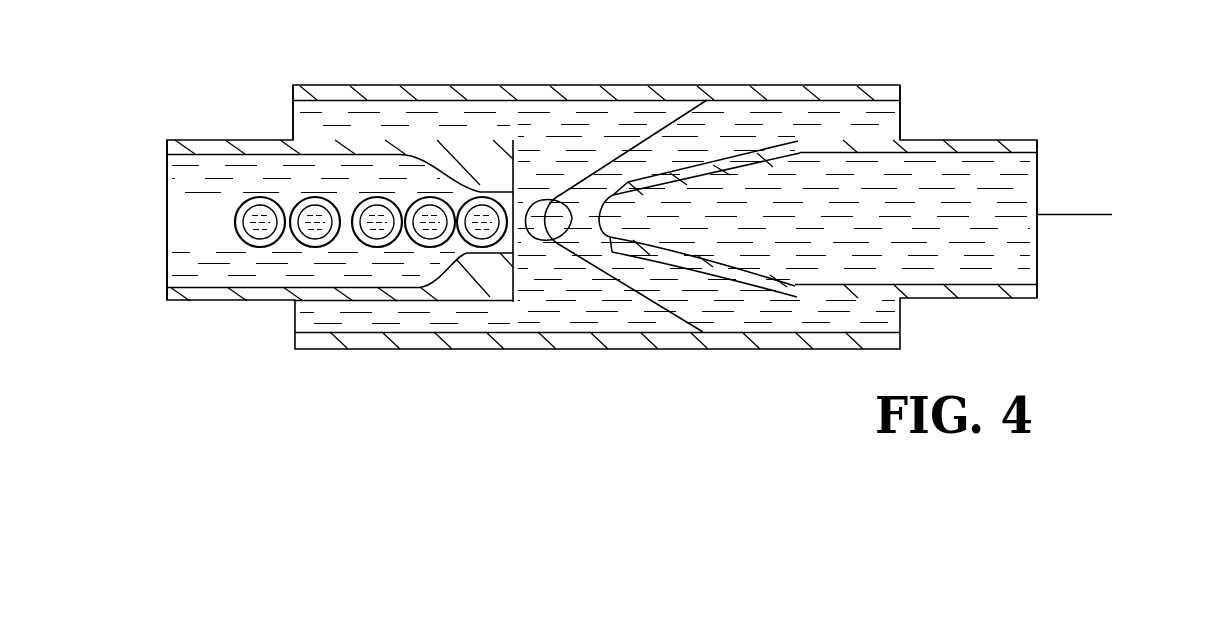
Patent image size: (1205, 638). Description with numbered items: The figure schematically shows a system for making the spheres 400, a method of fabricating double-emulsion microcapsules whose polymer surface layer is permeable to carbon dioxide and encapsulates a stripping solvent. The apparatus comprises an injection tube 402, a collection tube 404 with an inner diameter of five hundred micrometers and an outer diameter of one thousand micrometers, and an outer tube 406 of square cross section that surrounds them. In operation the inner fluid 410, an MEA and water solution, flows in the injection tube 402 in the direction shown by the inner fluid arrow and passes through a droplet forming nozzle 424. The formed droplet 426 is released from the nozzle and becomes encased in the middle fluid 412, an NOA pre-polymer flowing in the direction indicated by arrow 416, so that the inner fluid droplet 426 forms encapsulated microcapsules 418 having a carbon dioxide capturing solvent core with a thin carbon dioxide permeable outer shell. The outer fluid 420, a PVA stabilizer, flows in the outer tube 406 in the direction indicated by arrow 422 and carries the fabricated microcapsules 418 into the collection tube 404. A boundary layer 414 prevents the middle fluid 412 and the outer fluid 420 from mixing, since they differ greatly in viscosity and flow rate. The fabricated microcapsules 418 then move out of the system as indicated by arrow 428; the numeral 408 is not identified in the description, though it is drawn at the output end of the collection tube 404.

The system for making the spheres 400 is at (870, 35).
The injection tube 402 is at (1005, 141).
The collection tube 404 is at (248, 303).
The outer tube 406 is at (433, 353).
The output end face 408 is at (1015, 268).
The inner fluid 410 is at (1077, 214).
The middle fluid 412 is at (748, 137).
The boundary layer 414 is at (612, 275).
The arrow 416 is at (900, 114).
The encapsulated microcapsules 418 is at (380, 193).
The outer fluid 420 is at (470, 123).
The arrow 422 is at (293, 118).
The droplet forming nozzle 424 is at (628, 181).
The formed droplet 426 is at (548, 233).
The arrow 428 is at (167, 220).